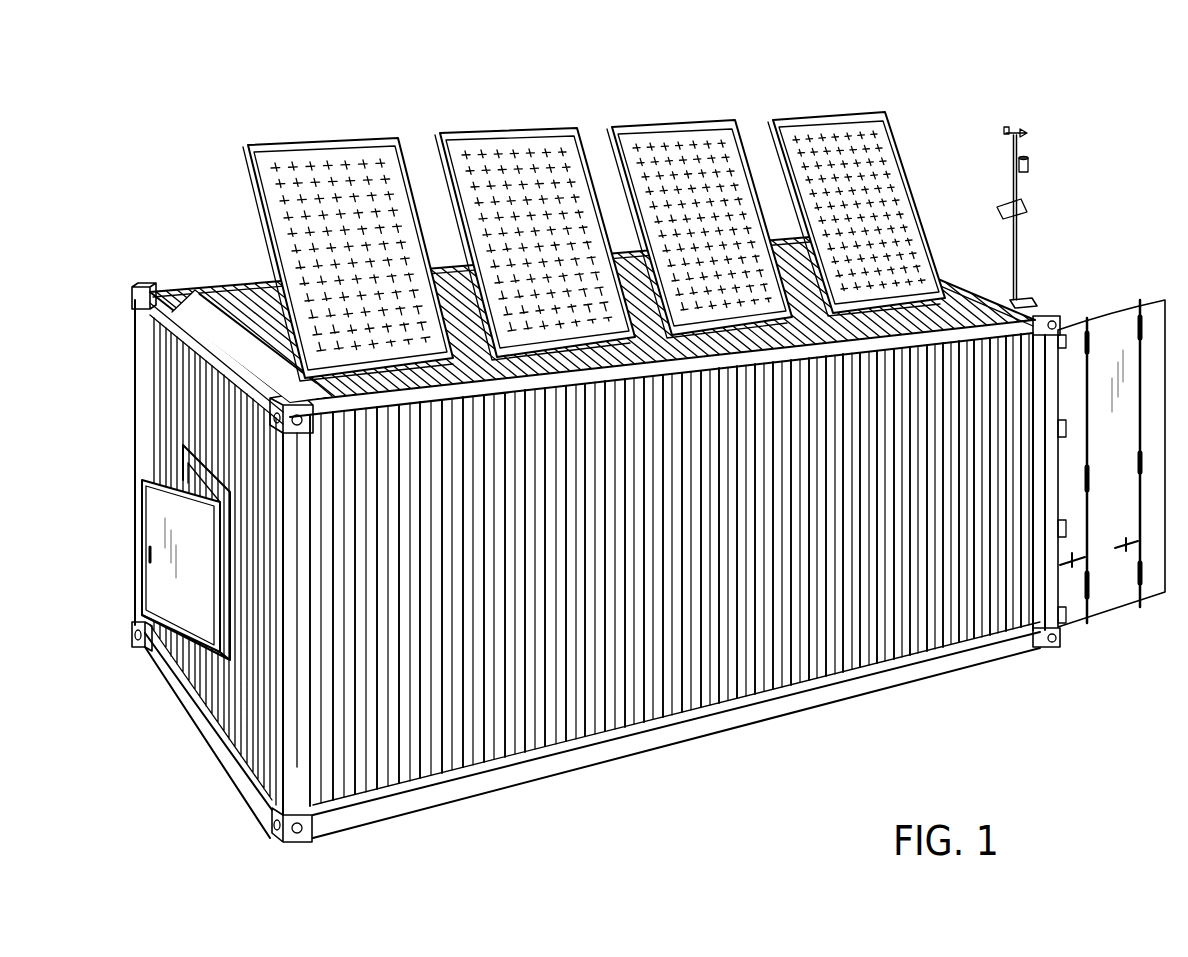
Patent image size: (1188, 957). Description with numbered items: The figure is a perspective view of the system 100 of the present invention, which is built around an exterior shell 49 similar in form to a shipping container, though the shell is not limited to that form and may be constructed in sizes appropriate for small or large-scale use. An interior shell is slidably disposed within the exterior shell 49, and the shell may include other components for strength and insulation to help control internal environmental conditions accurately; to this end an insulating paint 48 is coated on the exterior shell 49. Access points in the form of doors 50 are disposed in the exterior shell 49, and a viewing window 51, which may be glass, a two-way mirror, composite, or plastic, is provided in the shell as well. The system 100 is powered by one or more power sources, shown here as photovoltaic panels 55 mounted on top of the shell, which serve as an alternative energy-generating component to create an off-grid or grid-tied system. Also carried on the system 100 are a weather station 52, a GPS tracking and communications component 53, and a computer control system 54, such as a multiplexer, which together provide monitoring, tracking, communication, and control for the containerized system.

The system 100 is at (990, 703).
The insulating paint 48 is at (297, 744).
The exterior shell 49 is at (198, 333).
The exterior access panel or door 50 is at (1108, 352).
The viewing window 51 is at (171, 590).
The weather station 52 is at (1017, 207).
The GPS tracking and communications component 53 is at (1017, 207).
The computer control system 54 is at (1017, 207).
The photovoltaic system 55 is at (877, 166).